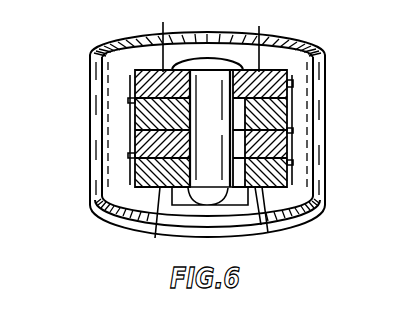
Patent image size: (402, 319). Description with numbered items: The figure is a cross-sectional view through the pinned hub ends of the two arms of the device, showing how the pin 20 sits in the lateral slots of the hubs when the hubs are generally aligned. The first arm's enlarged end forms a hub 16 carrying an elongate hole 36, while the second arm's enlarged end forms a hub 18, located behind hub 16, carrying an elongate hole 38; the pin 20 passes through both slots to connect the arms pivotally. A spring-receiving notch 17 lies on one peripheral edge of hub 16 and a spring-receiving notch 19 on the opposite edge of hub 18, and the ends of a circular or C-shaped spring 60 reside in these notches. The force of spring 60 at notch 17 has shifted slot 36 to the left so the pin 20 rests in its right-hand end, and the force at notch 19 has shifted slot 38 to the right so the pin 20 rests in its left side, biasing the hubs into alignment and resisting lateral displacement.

The hub 16 is at (268, 68).
The spring-receiving notch 17 is at (290, 90).
The hub 18 is at (132, 143).
The spring-receiving notch 19 is at (130, 101).
The pin 20 is at (228, 64).
The elongate hole 36 is at (161, 131).
The elongate hole 38 is at (261, 130).
The spring 60 is at (90, 72).